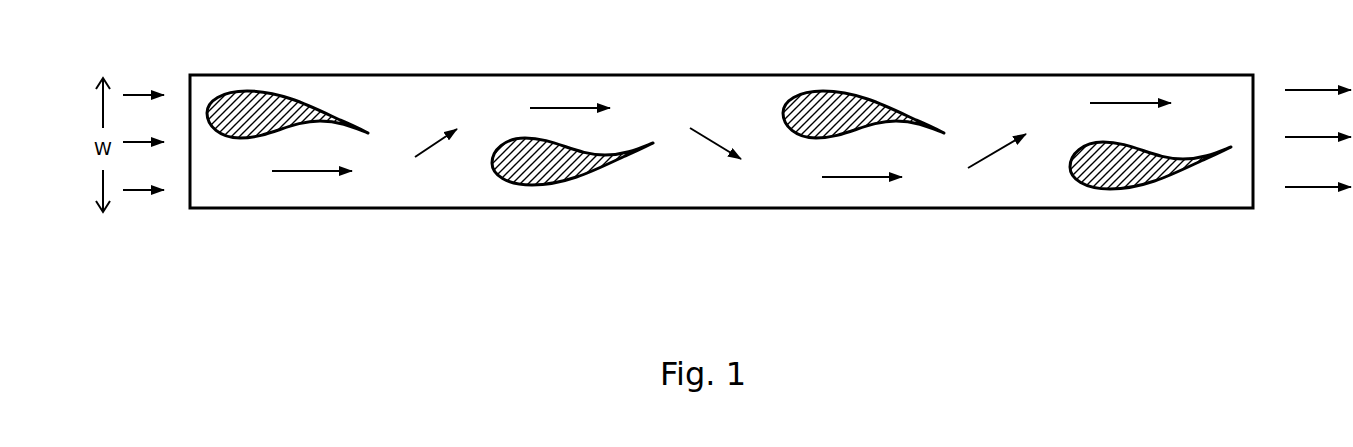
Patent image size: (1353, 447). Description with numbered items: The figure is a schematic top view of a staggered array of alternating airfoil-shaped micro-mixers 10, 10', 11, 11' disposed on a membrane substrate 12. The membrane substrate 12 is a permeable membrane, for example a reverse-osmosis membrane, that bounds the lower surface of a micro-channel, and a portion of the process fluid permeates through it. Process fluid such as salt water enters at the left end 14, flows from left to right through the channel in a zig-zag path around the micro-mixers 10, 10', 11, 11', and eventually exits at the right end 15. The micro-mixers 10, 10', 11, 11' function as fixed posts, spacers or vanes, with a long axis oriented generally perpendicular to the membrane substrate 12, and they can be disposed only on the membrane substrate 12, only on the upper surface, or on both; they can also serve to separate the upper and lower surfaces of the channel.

The airfoil-shaped micro-mixer 10 is at (276, 73).
The airfoil-shaped micro-mixer 10' is at (845, 73).
The airfoil-shaped micro-mixer 11 is at (572, 208).
The airfoil-shaped micro-mixer 11' is at (1150, 212).
The membrane substrate 12 is at (766, 193).
The left end 14 is at (143, 163).
The right end 15 is at (1318, 159).